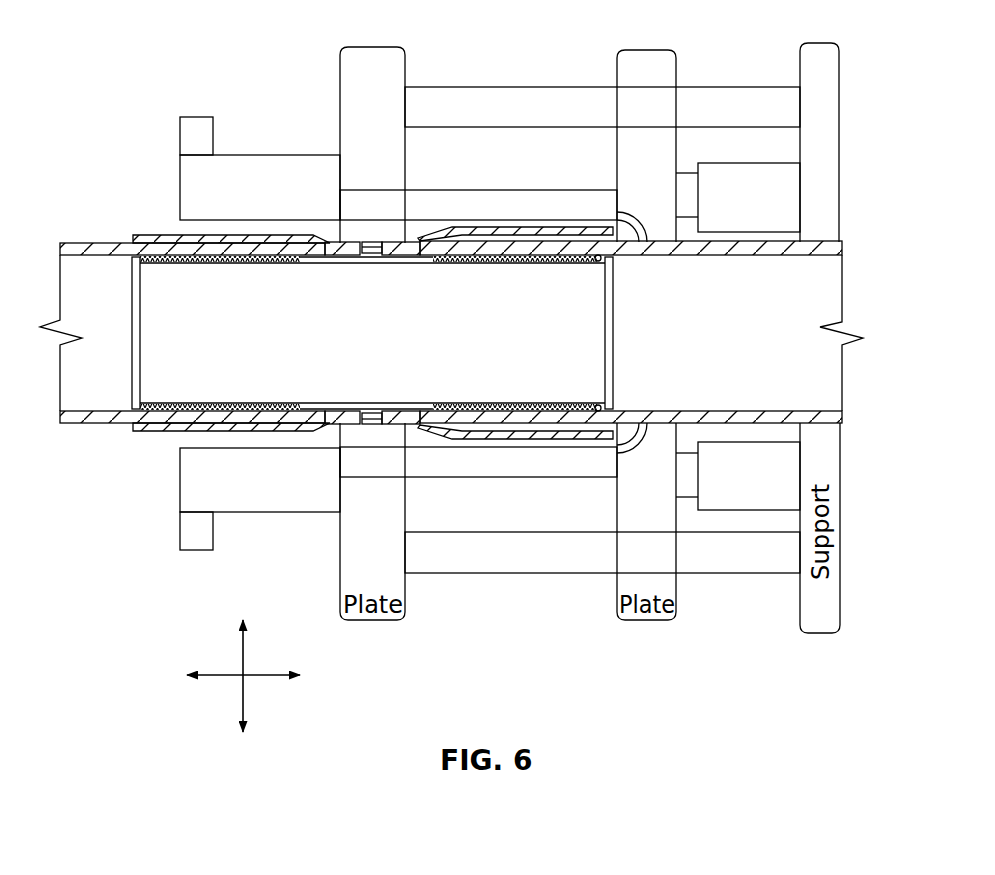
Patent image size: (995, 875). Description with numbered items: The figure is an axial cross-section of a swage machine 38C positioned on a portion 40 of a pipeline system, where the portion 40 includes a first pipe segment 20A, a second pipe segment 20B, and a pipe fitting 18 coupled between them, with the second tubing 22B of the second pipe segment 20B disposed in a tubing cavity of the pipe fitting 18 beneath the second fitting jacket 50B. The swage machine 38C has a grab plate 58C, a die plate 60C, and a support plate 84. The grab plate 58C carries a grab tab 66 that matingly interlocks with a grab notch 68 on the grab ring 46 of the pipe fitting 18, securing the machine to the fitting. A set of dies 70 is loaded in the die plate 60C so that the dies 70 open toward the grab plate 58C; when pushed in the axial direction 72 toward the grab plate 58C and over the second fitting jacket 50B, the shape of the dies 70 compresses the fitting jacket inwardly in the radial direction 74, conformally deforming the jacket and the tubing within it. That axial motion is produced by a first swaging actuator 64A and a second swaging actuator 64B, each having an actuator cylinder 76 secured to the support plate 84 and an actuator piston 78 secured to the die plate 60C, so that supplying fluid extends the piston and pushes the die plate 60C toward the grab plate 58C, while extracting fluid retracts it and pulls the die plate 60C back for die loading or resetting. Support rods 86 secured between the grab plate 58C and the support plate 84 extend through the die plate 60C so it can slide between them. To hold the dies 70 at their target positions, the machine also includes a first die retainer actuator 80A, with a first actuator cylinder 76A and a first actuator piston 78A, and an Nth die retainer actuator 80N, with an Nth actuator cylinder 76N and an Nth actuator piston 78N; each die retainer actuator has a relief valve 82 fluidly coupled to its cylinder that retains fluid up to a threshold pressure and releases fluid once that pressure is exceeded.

The pipe fitting 18 is at (166, 224).
The first pipe segment 20A is at (108, 232).
The second pipe segment 20B is at (850, 230).
The second tubing 22B is at (852, 414).
The swage machine 38C is at (514, 74).
The portion of pipeline system 40 is at (96, 158).
The grab ring 46 is at (402, 248).
The second fitting jacket 50B is at (518, 228).
The grab plate 58C is at (360, 47).
The die plate 60C is at (645, 50).
The first swaging actuator 64A is at (715, 148).
The second swaging actuator 64B is at (728, 520).
The grab tab 66 is at (378, 255).
The grab notch 68 is at (362, 256).
The die 70 is at (632, 212).
The axial direction 72 is at (262, 672).
The radial direction 74 is at (240, 658).
The actuator cylinder 76 is at (748, 163).
The first actuator cylinder 76A is at (268, 155).
The Nth actuator cylinder 76N is at (292, 512).
The actuator piston 78 is at (686, 173).
The first actuator piston 78A is at (440, 190).
The Nth actuator piston 78N is at (458, 477).
The first die retainer actuator 80A is at (146, 90).
The Nth die retainer actuator 80N is at (176, 584).
The relief valve 82 is at (179, 138).
The support plate 84 is at (815, 43).
The support rod 86 is at (520, 87).